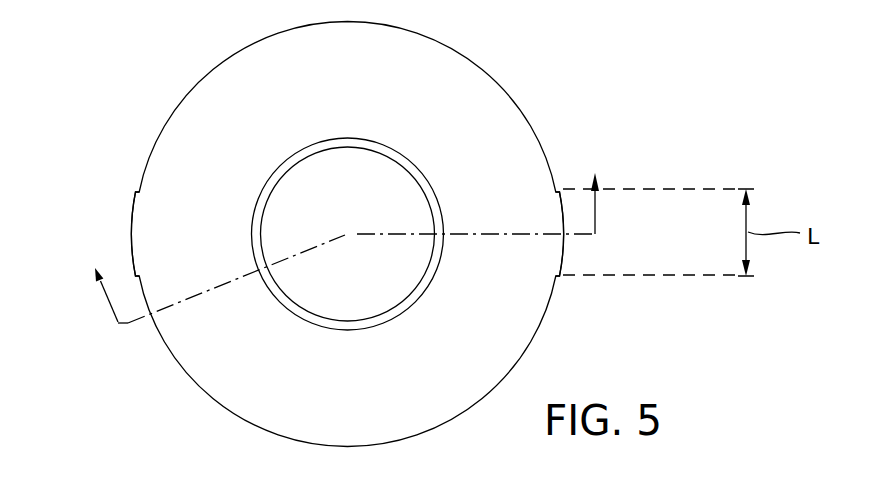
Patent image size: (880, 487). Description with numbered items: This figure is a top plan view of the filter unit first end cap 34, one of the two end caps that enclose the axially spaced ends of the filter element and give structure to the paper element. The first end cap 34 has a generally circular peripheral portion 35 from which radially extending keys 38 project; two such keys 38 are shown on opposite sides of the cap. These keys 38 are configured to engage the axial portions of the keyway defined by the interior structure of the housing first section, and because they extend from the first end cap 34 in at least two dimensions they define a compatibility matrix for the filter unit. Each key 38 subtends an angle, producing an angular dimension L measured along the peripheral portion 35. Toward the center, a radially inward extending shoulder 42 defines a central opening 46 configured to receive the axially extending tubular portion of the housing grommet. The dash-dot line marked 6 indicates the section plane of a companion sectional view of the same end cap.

The first end cap 34 is at (358, 230).
The peripheral portion 35 is at (448, 48).
The keys 38 is at (131, 213).
The shoulder 42 is at (410, 178).
The central opening 46 is at (315, 173).
The section line 6- 6 is at (342, 232).